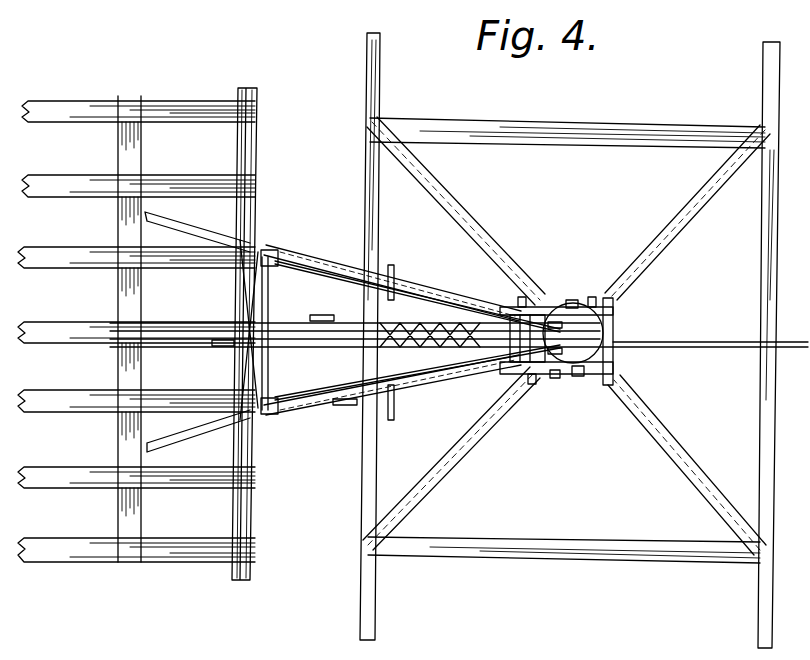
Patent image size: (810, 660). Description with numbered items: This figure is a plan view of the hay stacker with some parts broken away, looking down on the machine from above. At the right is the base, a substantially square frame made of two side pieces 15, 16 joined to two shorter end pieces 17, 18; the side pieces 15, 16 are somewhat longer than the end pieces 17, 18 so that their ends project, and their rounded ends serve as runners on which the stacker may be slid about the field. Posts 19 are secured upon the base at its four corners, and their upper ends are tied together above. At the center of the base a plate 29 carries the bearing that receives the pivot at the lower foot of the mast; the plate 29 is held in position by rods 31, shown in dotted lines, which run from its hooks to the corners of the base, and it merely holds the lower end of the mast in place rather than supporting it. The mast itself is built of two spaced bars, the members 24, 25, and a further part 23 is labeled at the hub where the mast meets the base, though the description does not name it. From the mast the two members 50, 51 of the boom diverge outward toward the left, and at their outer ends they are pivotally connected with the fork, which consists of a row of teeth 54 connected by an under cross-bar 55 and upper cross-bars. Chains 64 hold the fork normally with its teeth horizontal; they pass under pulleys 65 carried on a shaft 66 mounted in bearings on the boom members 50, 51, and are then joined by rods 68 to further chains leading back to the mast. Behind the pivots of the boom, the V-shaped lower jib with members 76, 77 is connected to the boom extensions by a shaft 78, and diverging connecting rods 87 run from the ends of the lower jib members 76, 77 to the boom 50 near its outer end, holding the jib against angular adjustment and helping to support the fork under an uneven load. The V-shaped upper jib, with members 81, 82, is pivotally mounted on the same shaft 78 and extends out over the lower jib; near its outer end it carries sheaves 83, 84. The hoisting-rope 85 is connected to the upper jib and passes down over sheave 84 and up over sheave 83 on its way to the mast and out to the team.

The side piece of the base 15 is at (381, 93).
The side piece of the base 16 is at (764, 106).
The end piece of the base 17 is at (605, 553).
The end piece of the base 18 is at (606, 128).
The post 19 is at (500, 241).
The collar 23 is at (578, 377).
The member of the mast 24 is at (555, 379).
The member of the mast 25 is at (572, 300).
The plate 29 is at (592, 300).
The rod 31 is at (397, 290).
The member of the boom 50 is at (322, 424).
The member of the boom 51 is at (312, 250).
The tooth 54 is at (125, 101).
The under cross-bar 55 is at (118, 140).
The chain 64 is at (353, 272).
The pulley 65 is at (272, 252).
The shaft 66 is at (285, 333).
The rod 68 is at (393, 266).
The member of the lower jib 76 is at (345, 400).
The member of the lower jib 77 is at (322, 316).
The shaft 78 is at (611, 333).
The member of the upper jib 81 is at (532, 385).
The member of the upper jib 82 is at (525, 305).
The sheave 83 is at (220, 344).
The sheave 84 is at (240, 376).
The hoisting-rope 85 is at (460, 382).
The diverging connecting rod 87 is at (243, 298).